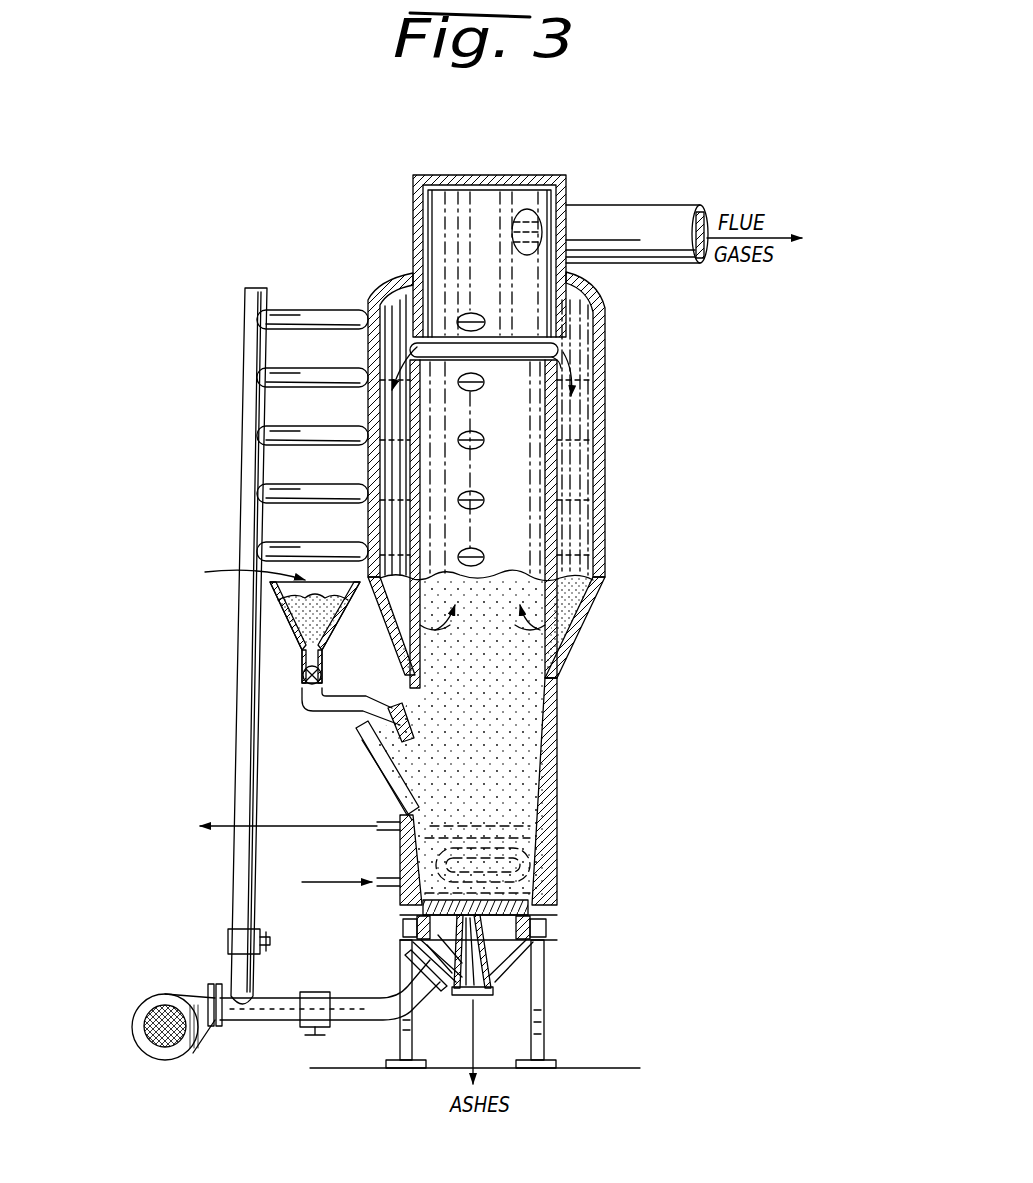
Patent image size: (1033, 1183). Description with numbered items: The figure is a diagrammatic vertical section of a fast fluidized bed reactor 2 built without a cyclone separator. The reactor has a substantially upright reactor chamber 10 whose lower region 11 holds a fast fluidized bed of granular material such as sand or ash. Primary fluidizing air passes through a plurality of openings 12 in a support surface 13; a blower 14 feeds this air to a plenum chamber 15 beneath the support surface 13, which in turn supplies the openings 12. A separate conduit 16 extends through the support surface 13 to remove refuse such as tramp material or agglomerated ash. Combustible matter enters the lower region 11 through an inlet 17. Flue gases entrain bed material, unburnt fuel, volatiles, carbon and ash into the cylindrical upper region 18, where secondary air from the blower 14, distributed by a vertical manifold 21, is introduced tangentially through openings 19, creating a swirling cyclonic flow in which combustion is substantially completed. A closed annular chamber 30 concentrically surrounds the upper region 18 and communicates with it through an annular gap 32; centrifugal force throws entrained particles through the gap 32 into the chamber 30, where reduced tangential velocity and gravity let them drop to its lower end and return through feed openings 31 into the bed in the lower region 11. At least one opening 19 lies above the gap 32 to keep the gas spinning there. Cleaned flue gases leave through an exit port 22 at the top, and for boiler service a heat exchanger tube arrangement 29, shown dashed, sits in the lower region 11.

The fast fluidized bed reactor 2 is at (318, 240).
The fluidized bed reactor chamber 10 is at (562, 515).
The lower region 11 is at (505, 742).
The openings 12 is at (505, 897).
The support surface 13 is at (522, 942).
The blower 14 is at (195, 1033).
The plenum chamber 15 is at (447, 980).
The conduit 16 is at (492, 988).
The inlet 17 is at (396, 738).
The upper region 18 is at (507, 445).
The openings 19 is at (467, 320).
The vertical manifold 21 is at (245, 347).
The exit port 22 is at (487, 300).
The heat exchanger tube arrangement 29 is at (388, 820).
The annular chamber 30 is at (603, 404).
The feed openings 31 is at (573, 630).
The annular gap 32 is at (556, 343).